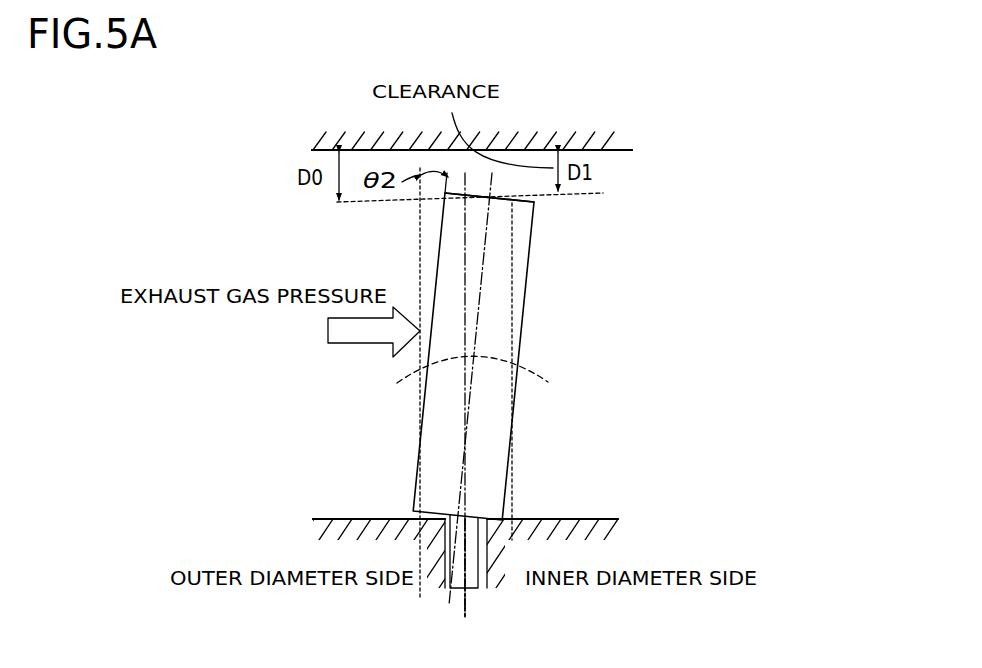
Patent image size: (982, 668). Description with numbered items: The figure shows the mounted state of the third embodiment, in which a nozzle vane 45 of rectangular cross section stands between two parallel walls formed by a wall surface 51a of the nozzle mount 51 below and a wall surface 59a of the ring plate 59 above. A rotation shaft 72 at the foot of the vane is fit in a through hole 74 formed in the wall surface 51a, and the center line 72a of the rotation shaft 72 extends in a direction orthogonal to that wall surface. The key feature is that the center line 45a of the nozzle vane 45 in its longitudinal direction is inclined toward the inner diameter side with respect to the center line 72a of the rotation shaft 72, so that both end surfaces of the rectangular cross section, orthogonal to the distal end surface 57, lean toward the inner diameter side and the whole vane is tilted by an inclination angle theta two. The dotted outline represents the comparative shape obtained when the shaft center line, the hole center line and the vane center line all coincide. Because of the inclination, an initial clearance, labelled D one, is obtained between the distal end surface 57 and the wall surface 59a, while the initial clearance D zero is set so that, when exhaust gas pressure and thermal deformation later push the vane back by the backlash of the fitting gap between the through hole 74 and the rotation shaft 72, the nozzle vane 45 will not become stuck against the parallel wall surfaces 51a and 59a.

The nozzle vane 45 is at (527, 303).
The center line of the nozzle vane 45a is at (473, 374).
The nozzle mount 51 is at (333, 527).
The wall surface of the nozzle mount 51a is at (335, 519).
The distal end surface of the nozzle vane 57 is at (528, 200).
The ring plate 59 is at (607, 138).
The wall surface of the ring plate 59a is at (610, 152).
The rotation shaft 72 is at (472, 588).
The center line of the rotation shaft 72a is at (463, 607).
The through hole 74 is at (480, 572).